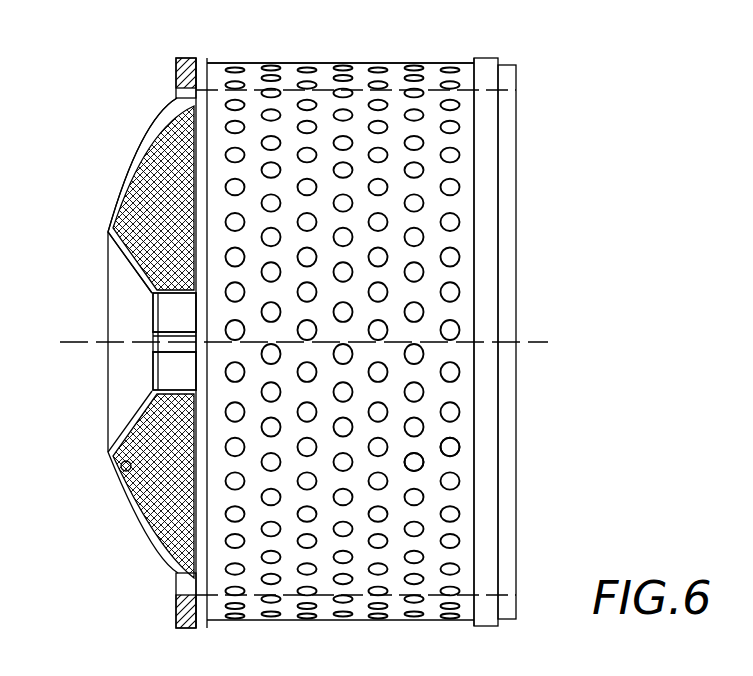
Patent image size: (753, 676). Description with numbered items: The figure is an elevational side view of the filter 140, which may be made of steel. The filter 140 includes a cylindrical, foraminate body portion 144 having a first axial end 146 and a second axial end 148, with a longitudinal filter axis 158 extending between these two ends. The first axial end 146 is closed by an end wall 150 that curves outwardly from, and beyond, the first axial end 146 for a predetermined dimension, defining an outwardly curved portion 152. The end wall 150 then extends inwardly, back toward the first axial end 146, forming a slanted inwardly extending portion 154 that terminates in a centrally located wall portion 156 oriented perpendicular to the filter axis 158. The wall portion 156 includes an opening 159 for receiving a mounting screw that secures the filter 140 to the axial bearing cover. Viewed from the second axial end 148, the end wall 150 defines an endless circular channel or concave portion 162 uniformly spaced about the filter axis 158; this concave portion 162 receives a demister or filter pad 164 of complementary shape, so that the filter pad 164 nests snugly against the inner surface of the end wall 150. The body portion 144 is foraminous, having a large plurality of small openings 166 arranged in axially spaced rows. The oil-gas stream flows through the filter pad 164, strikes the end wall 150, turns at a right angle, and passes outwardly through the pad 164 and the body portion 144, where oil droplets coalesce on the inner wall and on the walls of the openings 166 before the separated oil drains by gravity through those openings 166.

The filter 140 is at (379, 40).
The cylindrical foraminate body portion 144 is at (284, 63).
The first axial end 146 is at (183, 75).
The second axial end 148 is at (517, 72).
The end wall 150 is at (108, 230).
The outwardly curved portion 152 is at (153, 137).
The slanted inwardly extending portion 154 is at (135, 258).
The centrally located wall portion 156 is at (152, 366).
The longitudinal filter axis 158 is at (528, 340).
The opening 159 is at (152, 338).
The concave portion 162 is at (122, 478).
The filter pad 164 is at (178, 392).
The openings 166 is at (420, 462).